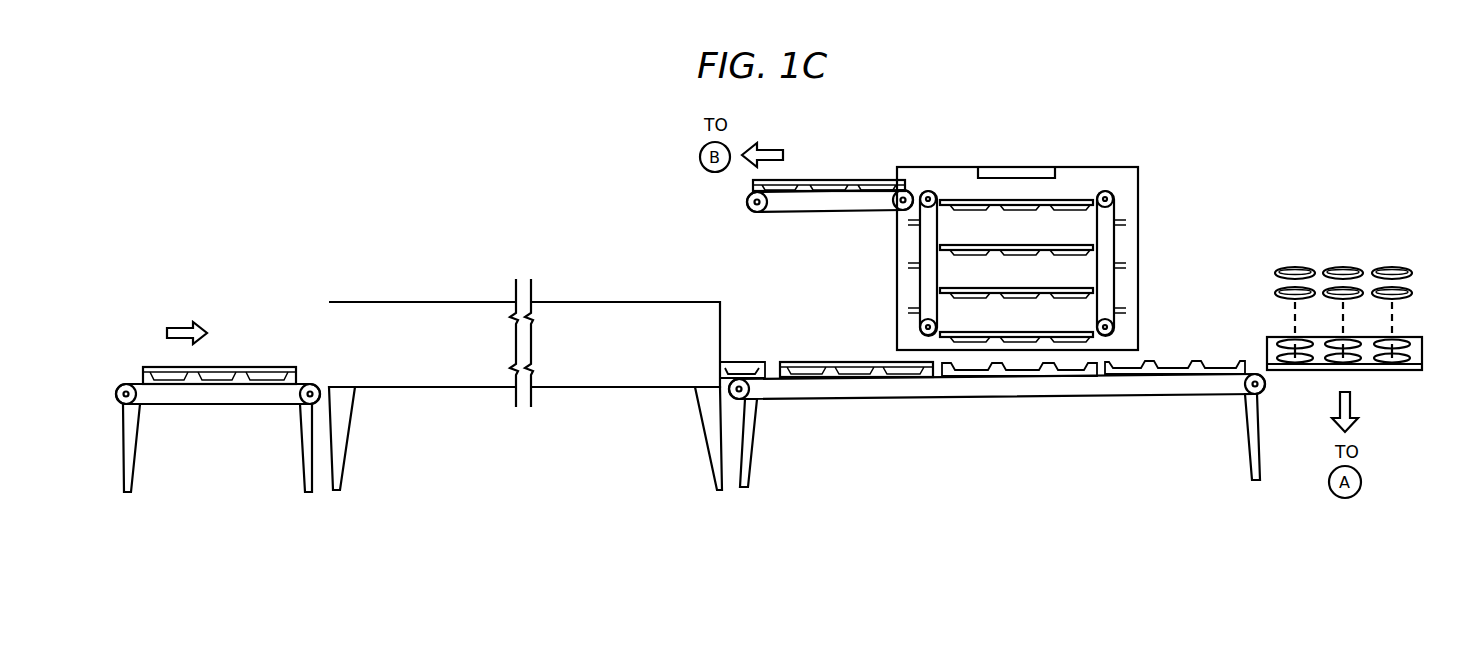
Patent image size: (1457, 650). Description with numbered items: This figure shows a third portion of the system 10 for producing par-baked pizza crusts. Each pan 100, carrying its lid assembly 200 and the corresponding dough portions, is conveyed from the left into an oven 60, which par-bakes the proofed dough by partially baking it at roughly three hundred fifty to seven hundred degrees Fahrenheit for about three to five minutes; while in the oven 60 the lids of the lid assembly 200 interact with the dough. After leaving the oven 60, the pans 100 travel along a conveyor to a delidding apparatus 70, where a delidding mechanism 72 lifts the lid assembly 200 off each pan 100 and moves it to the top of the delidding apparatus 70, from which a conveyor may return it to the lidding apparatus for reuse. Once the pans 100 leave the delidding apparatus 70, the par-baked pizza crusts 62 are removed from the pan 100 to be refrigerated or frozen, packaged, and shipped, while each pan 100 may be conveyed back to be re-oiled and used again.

The system 10 is at (630, 145).
The oven 60 is at (440, 302).
The delidding apparatus 70 is at (1041, 234).
The delidding mechanism 72 is at (1108, 283).
The lid assembly 200 is at (840, 180).
The par-baked pizza crusts 62 is at (1295, 268).
The pan 100 is at (1403, 372).